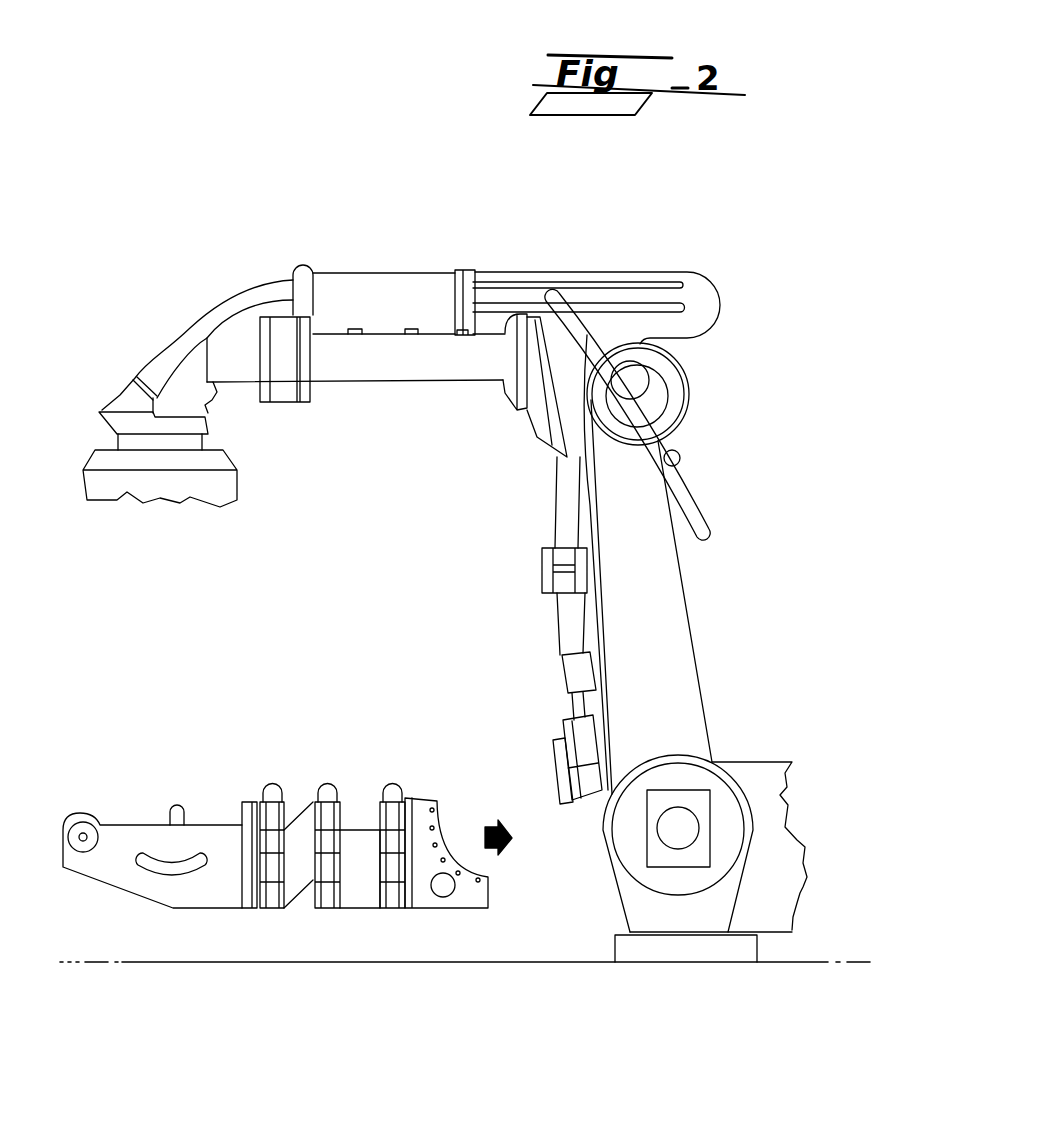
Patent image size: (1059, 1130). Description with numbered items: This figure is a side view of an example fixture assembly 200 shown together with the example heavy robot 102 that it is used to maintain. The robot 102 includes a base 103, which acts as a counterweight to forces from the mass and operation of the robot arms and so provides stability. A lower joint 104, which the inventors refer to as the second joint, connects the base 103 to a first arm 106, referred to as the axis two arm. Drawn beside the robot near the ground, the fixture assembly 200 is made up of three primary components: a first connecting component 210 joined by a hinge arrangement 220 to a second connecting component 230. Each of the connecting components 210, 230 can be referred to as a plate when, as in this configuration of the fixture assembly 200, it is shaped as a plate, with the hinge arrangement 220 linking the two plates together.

The robot 102 is at (403, 230).
The base 103 is at (756, 754).
The lower joint 104 is at (672, 742).
The first arm 106 is at (680, 575).
The fixture assembly 200 is at (331, 750).
The first connecting component 210 is at (140, 825).
The hinge arrangement 220 is at (340, 932).
The second connecting component 230 is at (442, 832).